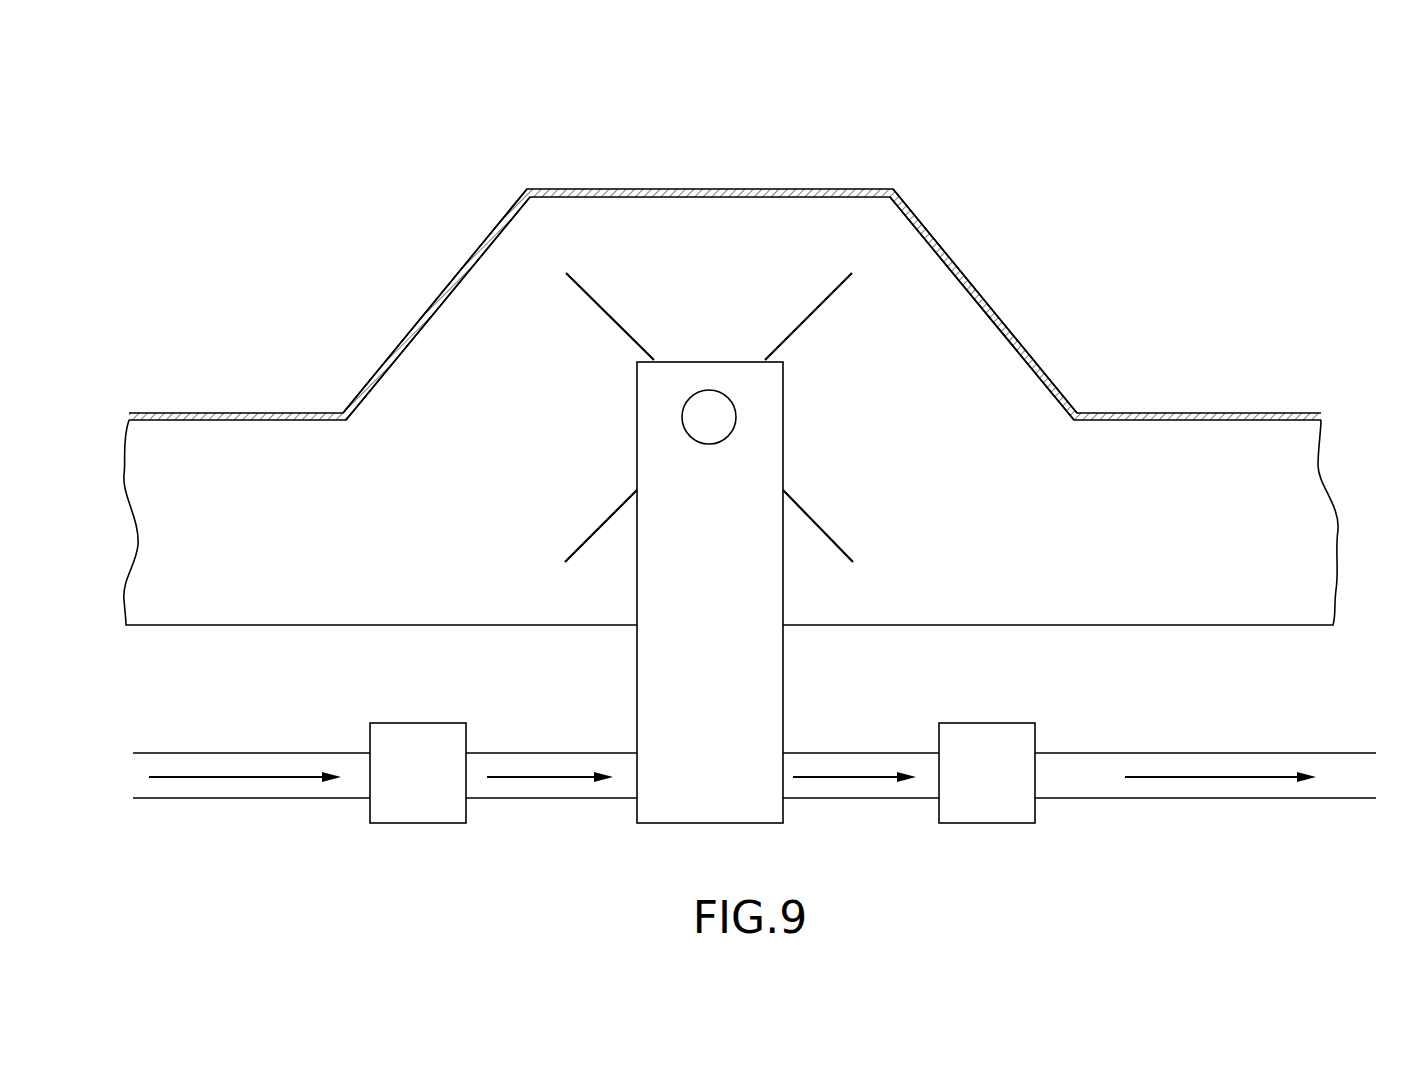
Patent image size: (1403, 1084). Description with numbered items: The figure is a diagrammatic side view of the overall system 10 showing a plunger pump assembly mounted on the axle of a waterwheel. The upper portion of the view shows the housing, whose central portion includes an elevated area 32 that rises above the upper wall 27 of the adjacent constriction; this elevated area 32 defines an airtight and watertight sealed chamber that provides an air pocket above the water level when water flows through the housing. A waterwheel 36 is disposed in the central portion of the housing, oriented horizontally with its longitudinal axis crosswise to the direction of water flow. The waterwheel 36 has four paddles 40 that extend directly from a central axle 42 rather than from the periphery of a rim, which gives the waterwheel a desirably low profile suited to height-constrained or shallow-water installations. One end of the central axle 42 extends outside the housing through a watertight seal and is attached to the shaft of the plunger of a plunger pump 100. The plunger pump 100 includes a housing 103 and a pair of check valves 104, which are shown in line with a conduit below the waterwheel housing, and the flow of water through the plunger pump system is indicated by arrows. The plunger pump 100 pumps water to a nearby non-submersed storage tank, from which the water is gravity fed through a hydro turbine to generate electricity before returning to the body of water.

The vehicle system 10 is at (1229, 155).
The upper wall 27 is at (1203, 413).
The elevated area 32 is at (992, 305).
The waterwheel 36 is at (758, 246).
The paddle 40 is at (593, 298).
The central axle 42 is at (722, 417).
The plunger pump 100 is at (930, 521).
The housing 103 is at (743, 587).
The check valve 104 is at (427, 798).